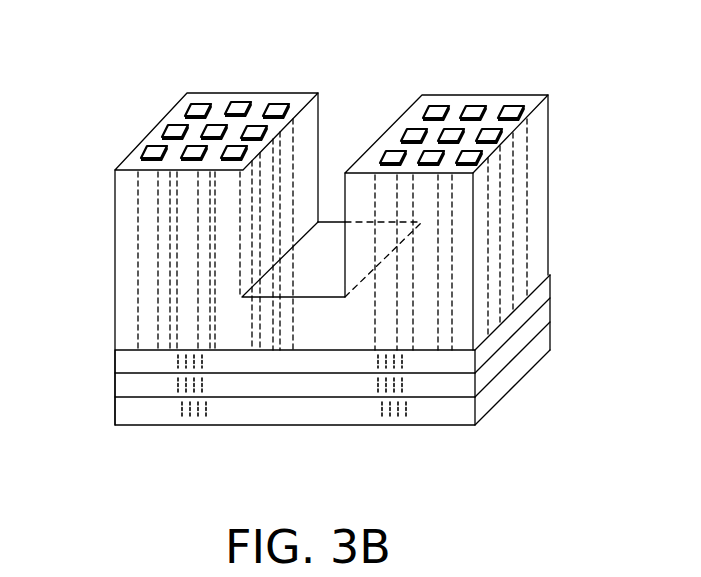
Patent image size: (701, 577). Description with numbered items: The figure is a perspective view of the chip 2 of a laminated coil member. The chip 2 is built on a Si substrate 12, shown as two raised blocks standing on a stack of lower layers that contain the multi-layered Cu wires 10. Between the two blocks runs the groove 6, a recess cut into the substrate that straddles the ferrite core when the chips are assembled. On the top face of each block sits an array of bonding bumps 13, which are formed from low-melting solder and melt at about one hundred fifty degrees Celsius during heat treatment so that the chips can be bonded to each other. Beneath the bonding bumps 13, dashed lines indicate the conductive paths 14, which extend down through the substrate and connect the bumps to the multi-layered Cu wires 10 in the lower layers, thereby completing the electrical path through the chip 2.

The chip 2 is at (533, 87).
The groove 6 is at (351, 132).
The multi-layered Cu wires 10 is at (553, 275).
The Si substrate 12 is at (550, 190).
The bonding bumps 13 is at (235, 103).
The conductive paths 14 is at (138, 226).